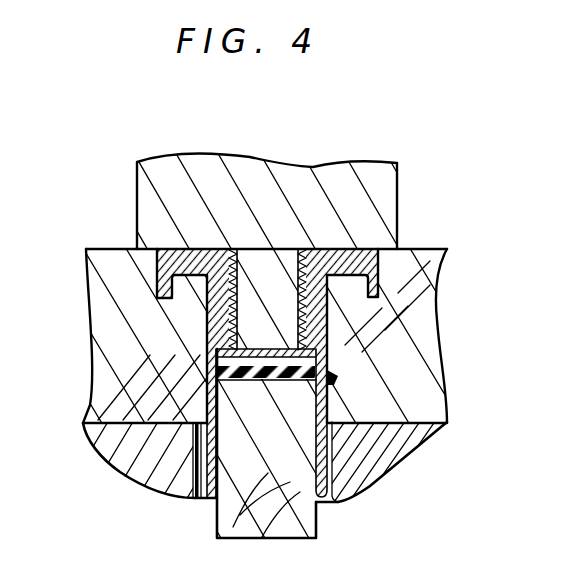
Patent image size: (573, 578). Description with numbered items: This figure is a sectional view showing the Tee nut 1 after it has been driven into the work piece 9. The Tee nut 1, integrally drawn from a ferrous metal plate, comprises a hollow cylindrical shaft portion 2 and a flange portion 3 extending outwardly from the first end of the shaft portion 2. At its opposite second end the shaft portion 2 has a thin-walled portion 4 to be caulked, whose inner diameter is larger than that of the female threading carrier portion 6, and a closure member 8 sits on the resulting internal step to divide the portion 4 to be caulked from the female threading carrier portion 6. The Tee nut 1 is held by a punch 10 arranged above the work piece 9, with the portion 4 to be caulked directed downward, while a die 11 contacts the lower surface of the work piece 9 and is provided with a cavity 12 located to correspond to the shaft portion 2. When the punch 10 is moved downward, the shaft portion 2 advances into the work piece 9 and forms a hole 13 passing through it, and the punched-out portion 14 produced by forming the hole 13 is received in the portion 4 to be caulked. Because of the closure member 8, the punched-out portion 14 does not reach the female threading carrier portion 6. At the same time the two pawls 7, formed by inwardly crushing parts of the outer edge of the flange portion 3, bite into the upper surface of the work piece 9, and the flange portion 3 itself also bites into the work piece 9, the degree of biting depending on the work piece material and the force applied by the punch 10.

The Tee nut 1 is at (276, 232).
The shaft portion 2 is at (327, 335).
The flange portion 3 is at (197, 250).
The portion to be caulked 4 is at (327, 450).
The female threading carrier portion 6 is at (327, 300).
The pawls 7 is at (157, 285).
The closure member 8 is at (206, 397).
The work piece 9 is at (88, 331).
The punch 10 is at (143, 195).
The die 11 is at (112, 460).
The cavity 12 is at (331, 499).
The hole 13 is at (327, 397).
The punched-out portion 14 is at (225, 520).